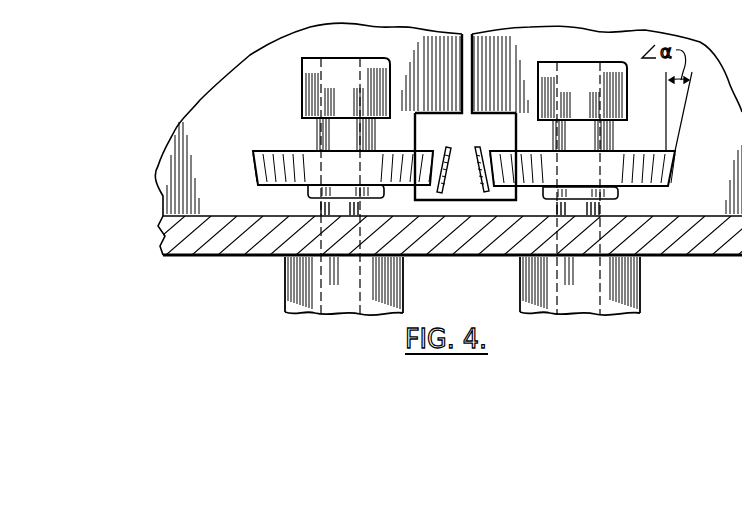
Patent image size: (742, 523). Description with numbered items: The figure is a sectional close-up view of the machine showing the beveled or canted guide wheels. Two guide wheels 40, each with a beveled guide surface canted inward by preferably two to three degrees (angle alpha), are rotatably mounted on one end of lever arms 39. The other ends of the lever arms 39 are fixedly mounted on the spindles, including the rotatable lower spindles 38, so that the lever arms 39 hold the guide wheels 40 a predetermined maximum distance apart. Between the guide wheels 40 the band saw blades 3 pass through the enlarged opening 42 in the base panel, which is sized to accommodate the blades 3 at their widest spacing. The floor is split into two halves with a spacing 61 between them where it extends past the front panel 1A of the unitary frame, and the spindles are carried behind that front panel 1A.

The spacing 61 is at (468, 31).
The lever arm 39 is at (315, 88).
The guide wheel 40 is at (265, 151).
The saw blade 3 is at (470, 149).
The lower spindle 38 is at (320, 210).
The front panel 1A is at (262, 248).
The enlarged opening 42 is at (467, 190).